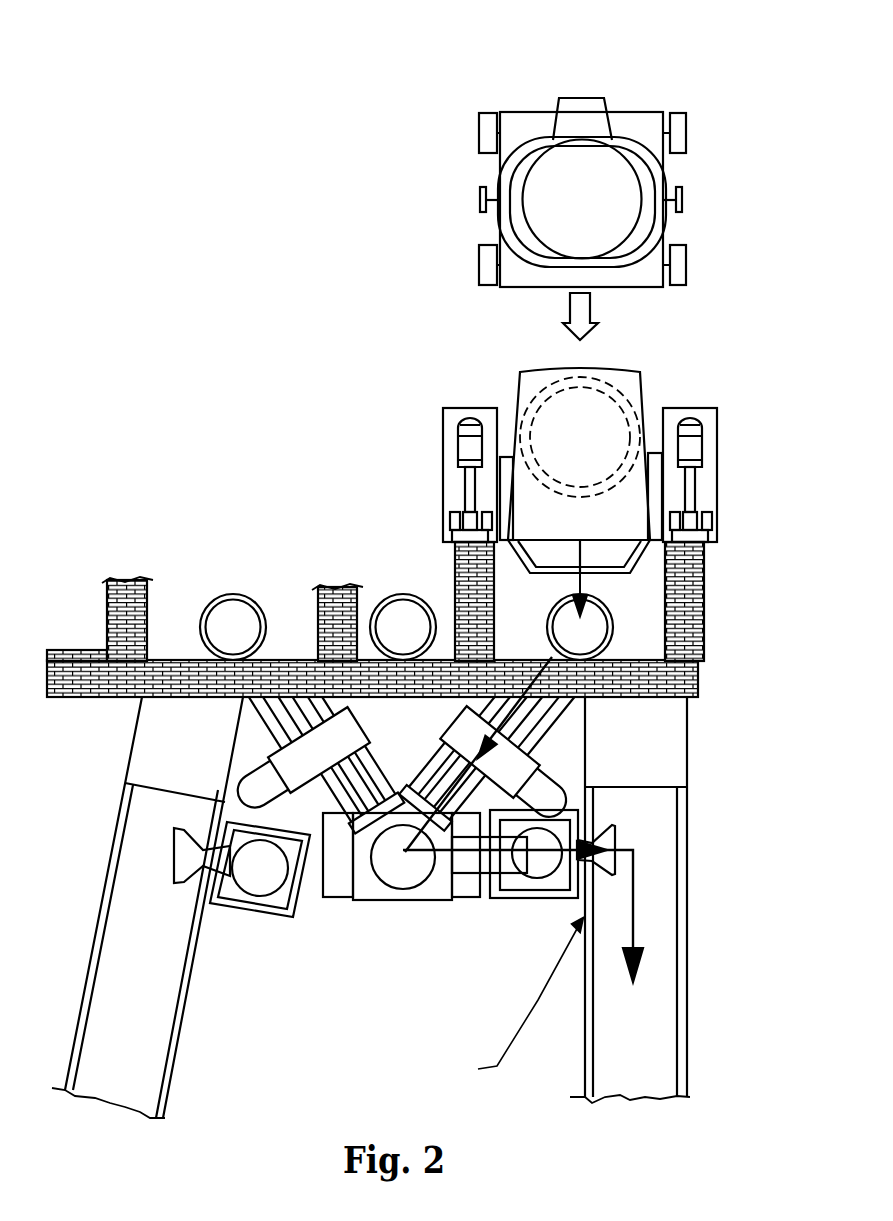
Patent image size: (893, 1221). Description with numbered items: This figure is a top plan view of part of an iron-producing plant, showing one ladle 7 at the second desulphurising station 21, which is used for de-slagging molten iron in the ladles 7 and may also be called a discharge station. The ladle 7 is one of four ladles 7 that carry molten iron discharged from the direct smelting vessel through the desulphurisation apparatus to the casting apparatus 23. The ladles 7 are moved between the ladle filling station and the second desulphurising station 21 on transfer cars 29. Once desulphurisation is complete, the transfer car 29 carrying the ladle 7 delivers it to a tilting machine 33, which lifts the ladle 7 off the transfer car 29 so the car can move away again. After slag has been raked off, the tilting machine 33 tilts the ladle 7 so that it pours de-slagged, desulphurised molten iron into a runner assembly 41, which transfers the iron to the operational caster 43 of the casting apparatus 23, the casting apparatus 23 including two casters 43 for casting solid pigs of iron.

The transfer car 29 is at (640, 122).
The ladle 7 is at (628, 193).
The second desulphurising station 21 is at (425, 586).
The tilting machine 33 is at (462, 440).
The casting apparatus 23 is at (431, 887).
The runner assembly 41 is at (478, 912).
The caster 43 is at (150, 1041).